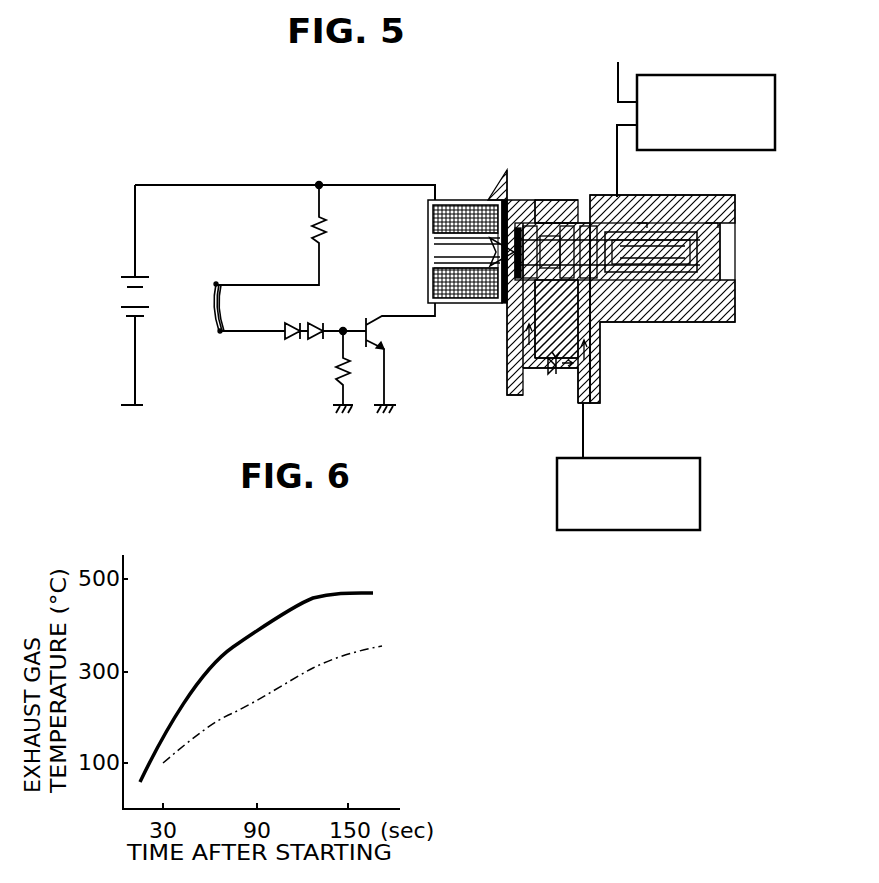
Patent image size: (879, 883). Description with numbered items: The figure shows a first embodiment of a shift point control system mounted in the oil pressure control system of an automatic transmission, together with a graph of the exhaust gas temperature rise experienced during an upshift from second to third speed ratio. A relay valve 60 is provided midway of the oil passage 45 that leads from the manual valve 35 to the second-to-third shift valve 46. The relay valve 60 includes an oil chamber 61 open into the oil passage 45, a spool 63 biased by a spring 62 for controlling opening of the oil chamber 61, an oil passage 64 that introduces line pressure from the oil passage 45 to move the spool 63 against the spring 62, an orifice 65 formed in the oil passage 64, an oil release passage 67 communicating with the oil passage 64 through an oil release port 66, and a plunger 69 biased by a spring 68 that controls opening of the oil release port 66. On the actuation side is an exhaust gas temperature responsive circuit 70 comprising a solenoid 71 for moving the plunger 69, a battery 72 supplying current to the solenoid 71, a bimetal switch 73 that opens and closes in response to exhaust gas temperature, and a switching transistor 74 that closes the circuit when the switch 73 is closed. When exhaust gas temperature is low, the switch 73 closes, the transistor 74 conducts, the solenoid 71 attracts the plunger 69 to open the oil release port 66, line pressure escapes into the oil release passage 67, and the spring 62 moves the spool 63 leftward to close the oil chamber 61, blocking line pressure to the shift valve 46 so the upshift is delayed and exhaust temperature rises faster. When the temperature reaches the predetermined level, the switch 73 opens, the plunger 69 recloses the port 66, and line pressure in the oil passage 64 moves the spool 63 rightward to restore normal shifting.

The manual valve 35 is at (622, 458).
The oil passage 45 is at (617, 126).
The 2-3 shift valve 46 is at (679, 75).
The relay valve 60 is at (687, 207).
The oil chamber 61 is at (600, 216).
The spring 62 is at (680, 285).
The spool 63 is at (660, 288).
The oil passage 64 is at (501, 297).
The orifice 65 is at (552, 356).
The oil release port 66 is at (532, 212).
The oil release passage 67 is at (467, 268).
The spring 68 is at (432, 244).
The plunger 69 is at (448, 252).
The exhaust gas temperature responsive circuit 70 is at (333, 184).
The solenoid 71 is at (462, 200).
The battery 72 is at (196, 294).
The bimetal switch 73 is at (293, 320).
The switching transistor 74 is at (362, 318).